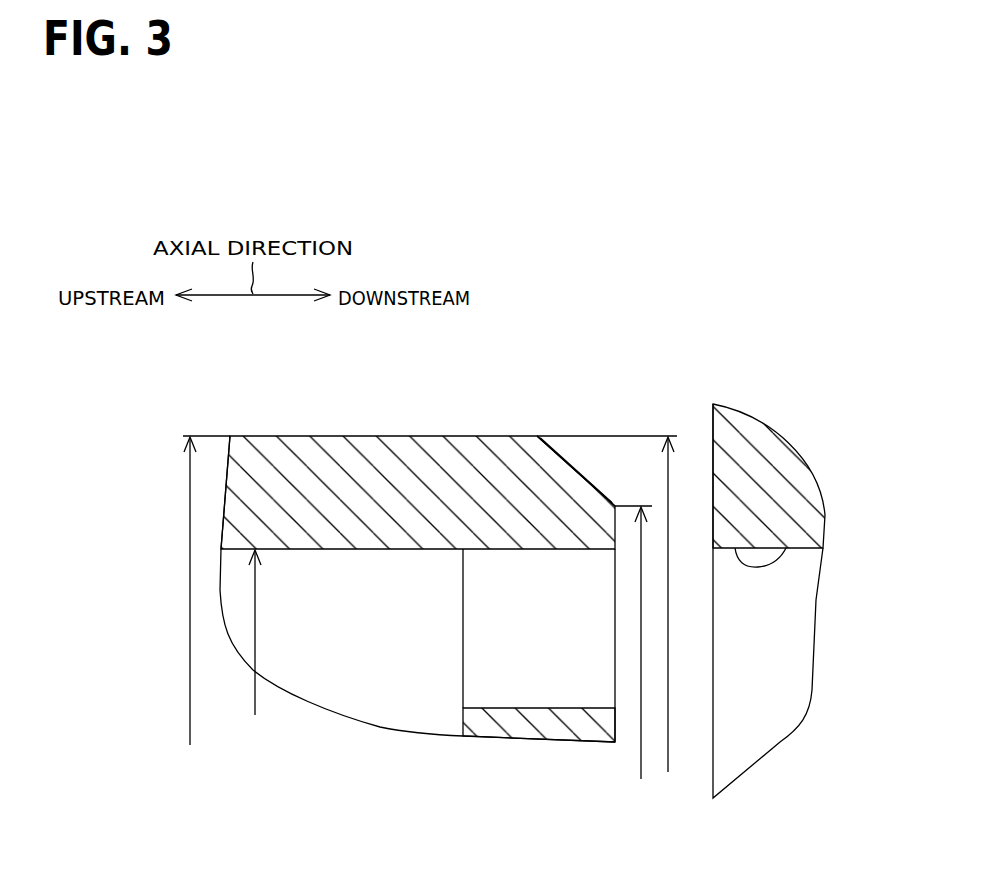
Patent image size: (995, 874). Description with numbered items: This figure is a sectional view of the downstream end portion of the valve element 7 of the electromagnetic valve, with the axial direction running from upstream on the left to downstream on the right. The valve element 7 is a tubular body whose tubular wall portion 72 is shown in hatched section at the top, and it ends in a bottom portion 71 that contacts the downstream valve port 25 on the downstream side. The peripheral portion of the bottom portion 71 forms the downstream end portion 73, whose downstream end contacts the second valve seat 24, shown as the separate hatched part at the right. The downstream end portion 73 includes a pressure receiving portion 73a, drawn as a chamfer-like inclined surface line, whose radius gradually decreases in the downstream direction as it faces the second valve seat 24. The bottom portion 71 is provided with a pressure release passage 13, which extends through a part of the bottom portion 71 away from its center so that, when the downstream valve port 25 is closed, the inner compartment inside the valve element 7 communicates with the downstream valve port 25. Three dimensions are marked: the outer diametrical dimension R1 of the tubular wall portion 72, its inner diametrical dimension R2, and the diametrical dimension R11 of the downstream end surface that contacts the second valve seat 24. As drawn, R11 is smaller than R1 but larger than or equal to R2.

The valve element 7 is at (428, 432).
The tubular wall portion 72 is at (325, 453).
The downstream end portion 73 is at (553, 475).
The pressure receiving portion 73a is at (594, 484).
The bottom portion 71 is at (539, 727).
The pressure release passage 13 is at (580, 549).
The second valve seat 24 is at (723, 477).
The downstream valve port 25 is at (786, 548).
The diametrical dimension of the tubular wall portion R1 is at (431, 604).
The inner diametrical dimension of the tubular wall portion R2 is at (240, 632).
The diametrical dimension of the downstream end surface R11 is at (643, 757).